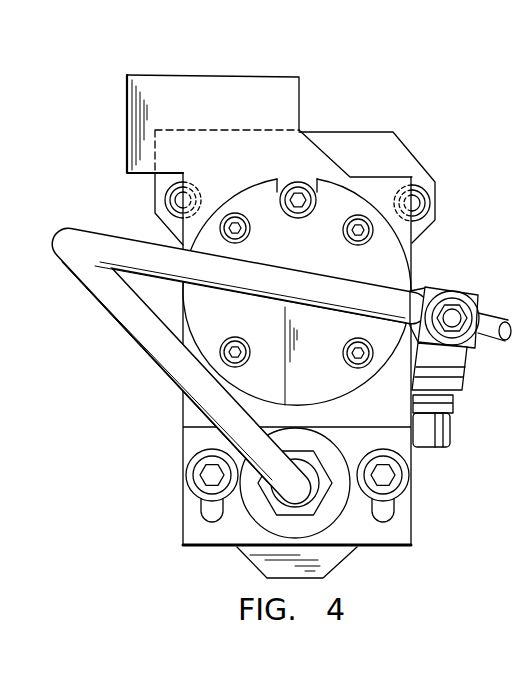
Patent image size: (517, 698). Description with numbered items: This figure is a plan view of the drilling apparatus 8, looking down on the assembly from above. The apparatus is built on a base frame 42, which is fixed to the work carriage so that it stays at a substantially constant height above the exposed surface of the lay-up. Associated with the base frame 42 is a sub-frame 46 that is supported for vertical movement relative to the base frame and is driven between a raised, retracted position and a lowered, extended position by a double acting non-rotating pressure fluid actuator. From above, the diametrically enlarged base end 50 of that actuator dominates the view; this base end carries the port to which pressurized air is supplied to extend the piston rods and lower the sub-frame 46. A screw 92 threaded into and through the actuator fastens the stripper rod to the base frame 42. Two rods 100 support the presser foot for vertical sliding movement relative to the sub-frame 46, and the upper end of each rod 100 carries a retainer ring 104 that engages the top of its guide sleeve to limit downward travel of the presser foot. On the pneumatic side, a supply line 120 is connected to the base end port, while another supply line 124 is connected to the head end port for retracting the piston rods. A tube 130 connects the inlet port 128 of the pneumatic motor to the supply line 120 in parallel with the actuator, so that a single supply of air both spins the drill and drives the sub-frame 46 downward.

The drilling apparatus 8 is at (92, 63).
The base frame 42 is at (212, 75).
The retainer ring 104 is at (183, 173).
The rod 100 is at (173, 198).
The screw 92 is at (297, 183).
The base end 50 is at (393, 270).
The supply line 120 is at (445, 302).
The supply line 124 is at (483, 342).
The tube 130 is at (72, 280).
The inlet port 128 is at (317, 450).
The sub-frame 46 is at (257, 572).